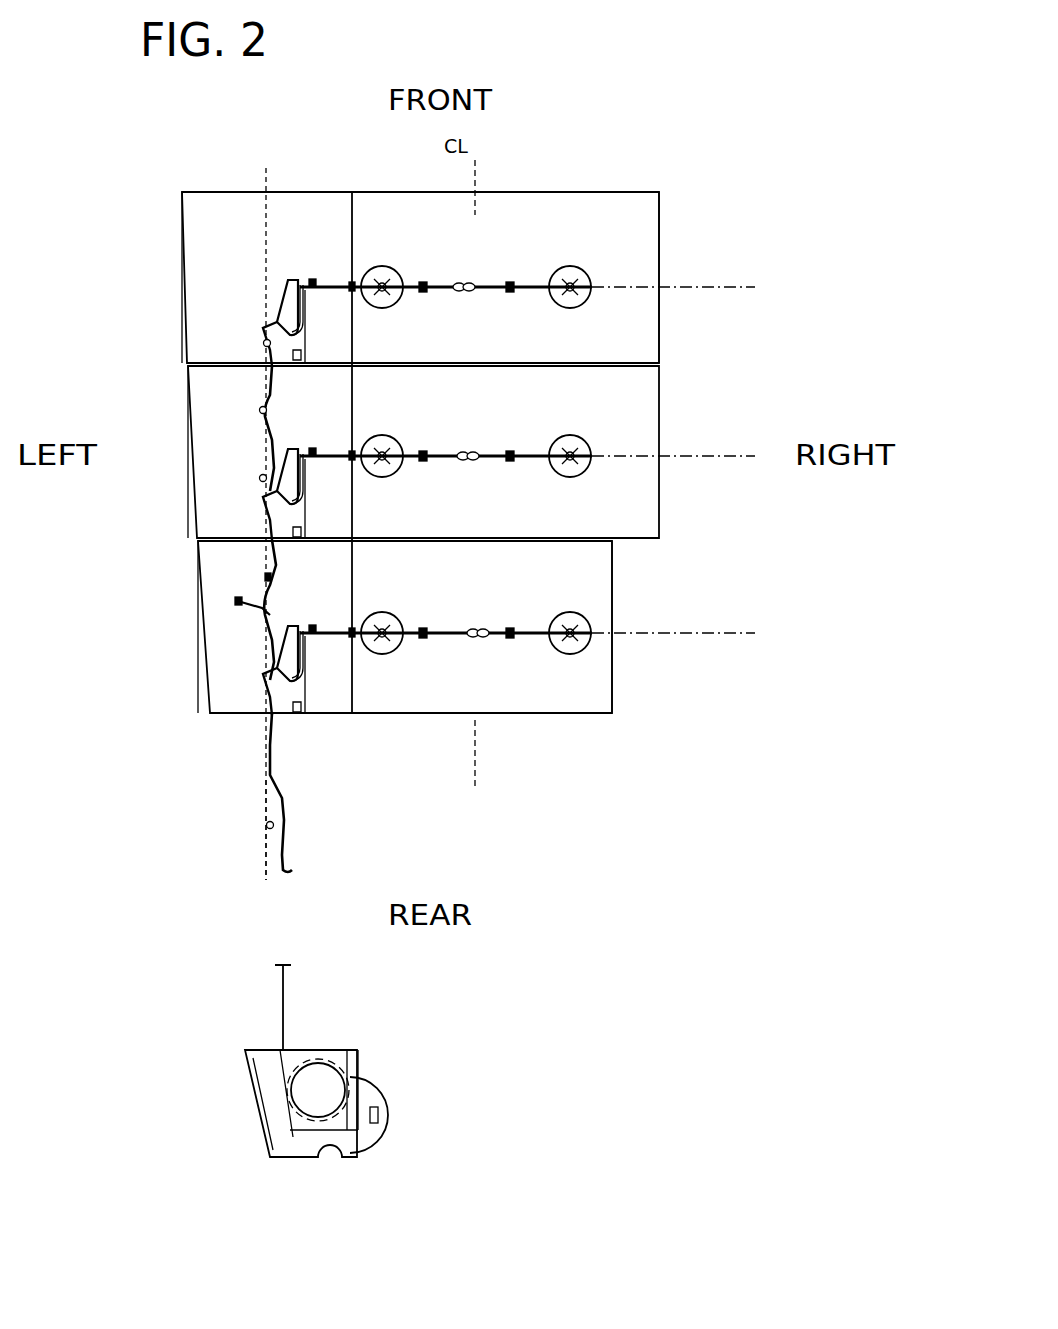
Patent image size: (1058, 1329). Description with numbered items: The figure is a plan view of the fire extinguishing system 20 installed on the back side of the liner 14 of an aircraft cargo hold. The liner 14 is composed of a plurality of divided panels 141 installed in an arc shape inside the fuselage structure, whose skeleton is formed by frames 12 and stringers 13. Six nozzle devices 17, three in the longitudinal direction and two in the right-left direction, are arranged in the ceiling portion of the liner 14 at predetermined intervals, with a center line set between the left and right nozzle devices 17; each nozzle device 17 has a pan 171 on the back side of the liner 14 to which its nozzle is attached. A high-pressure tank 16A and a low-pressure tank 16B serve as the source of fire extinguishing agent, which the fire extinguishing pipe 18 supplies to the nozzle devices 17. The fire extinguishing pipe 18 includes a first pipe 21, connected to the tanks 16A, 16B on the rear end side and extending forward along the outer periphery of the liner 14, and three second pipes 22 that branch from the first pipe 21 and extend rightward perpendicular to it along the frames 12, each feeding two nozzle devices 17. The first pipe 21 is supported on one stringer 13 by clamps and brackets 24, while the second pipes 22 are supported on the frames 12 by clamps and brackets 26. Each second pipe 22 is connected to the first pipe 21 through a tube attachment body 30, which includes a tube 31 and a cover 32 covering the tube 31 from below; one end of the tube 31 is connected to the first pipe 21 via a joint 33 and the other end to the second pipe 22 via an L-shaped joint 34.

The frame 12 is at (750, 252).
The stringer 13 is at (264, 182).
The liner 14 is at (656, 192).
The divided panel 141 is at (660, 226).
The high-pressure tank 16A is at (313, 1057).
The low-pressure tank 16B is at (390, 1100).
The nozzle device 17 is at (396, 263).
The pan 171 is at (389, 308).
The fire extinguishing pipe 18 is at (294, 778).
The fire extinguishing system 20 is at (581, 159).
The first pipe 21 is at (262, 548).
The second pipe 22 is at (474, 283).
The bracket 24 is at (262, 343).
The bracket 26 is at (312, 279).
The tube attachment body 30 is at (352, 300).
The tube 31 is at (306, 340).
The cover 32 is at (305, 330).
The joint 33 is at (263, 328).
The joint 34 is at (294, 280).